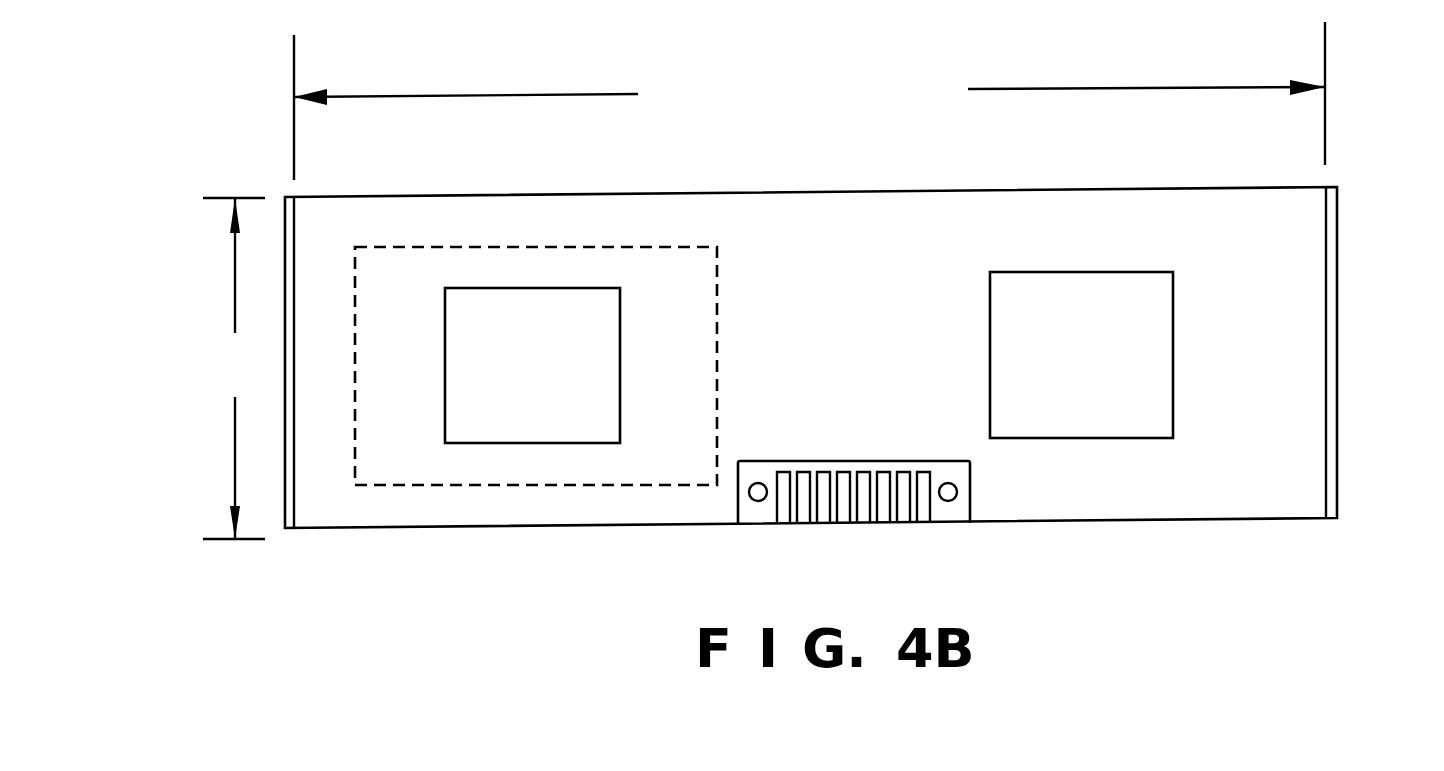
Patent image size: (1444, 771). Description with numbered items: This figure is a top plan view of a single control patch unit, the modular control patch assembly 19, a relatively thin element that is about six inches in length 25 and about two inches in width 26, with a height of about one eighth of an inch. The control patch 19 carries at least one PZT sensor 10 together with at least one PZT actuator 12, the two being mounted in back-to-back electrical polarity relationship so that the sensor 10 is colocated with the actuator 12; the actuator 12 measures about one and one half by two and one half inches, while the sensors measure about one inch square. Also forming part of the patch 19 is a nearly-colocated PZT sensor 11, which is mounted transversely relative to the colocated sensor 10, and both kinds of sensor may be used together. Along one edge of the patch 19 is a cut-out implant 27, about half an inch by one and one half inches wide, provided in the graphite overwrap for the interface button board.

The PZT sensor 10 is at (527, 303).
The nearly-colocated PZT sensor 11 is at (1157, 363).
The PZT actuator 12 is at (660, 243).
The modular control patch assembly 19 is at (1338, 228).
The length 25 is at (1112, 88).
The width 26 is at (232, 277).
The cut-out implant 27 is at (843, 533).